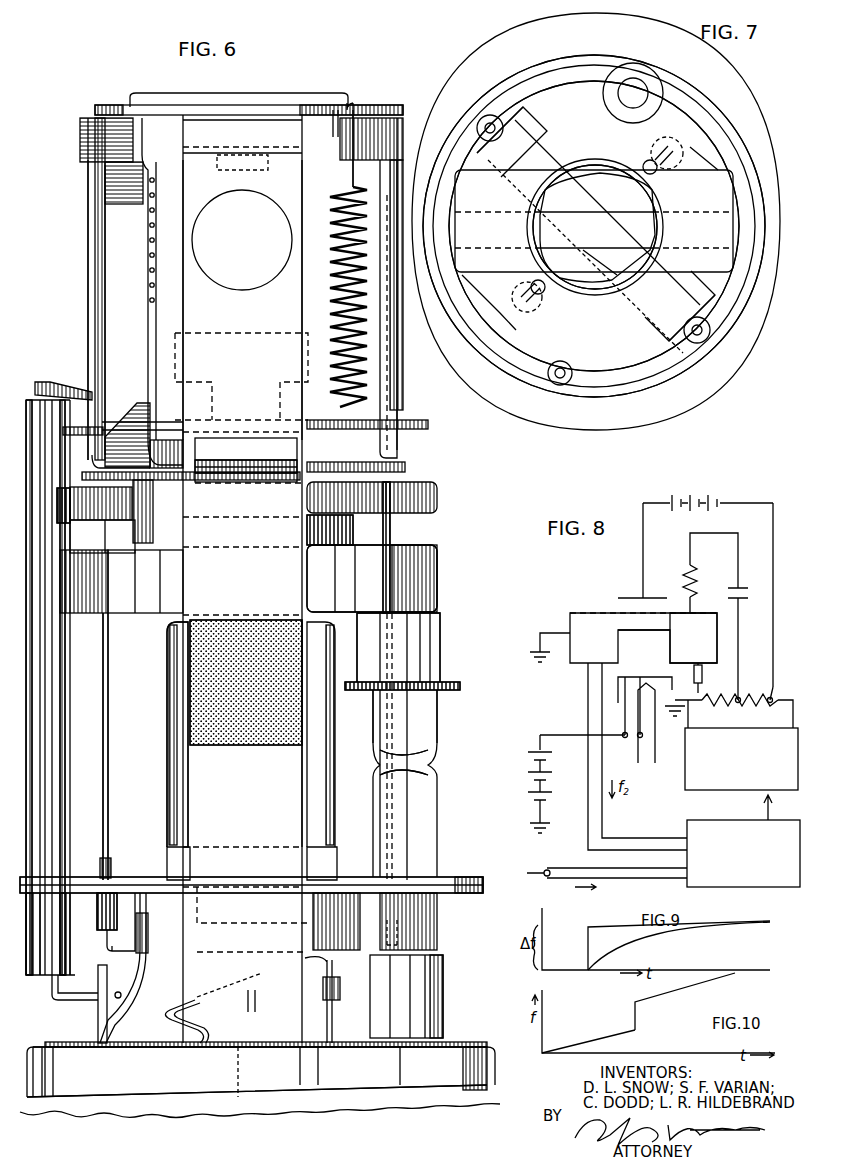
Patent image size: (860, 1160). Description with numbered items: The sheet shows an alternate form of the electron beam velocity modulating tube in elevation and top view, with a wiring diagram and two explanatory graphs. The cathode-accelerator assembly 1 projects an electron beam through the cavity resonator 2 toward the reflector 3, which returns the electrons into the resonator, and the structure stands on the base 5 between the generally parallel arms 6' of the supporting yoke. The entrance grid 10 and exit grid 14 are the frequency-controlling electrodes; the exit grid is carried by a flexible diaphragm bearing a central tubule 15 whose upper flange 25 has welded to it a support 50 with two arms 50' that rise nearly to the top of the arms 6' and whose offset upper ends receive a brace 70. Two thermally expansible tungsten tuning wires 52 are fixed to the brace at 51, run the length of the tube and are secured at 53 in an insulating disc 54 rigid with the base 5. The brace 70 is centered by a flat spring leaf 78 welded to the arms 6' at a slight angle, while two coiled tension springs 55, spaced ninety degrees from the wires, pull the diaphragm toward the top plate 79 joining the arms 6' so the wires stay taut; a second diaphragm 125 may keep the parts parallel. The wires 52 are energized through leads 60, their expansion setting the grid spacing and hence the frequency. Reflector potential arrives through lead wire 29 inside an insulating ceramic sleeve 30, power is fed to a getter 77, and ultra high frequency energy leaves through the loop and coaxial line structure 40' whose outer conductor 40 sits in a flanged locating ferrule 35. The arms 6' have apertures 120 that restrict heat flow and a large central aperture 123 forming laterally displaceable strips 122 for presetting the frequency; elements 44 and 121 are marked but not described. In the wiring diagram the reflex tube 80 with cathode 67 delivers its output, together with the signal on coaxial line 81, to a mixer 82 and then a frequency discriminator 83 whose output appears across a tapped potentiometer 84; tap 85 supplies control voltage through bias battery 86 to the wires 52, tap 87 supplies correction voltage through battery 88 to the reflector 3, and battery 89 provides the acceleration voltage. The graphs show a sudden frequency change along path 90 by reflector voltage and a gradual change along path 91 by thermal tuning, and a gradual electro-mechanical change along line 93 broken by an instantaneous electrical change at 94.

In FIG. 6, the cathode-accelerator assembly 1 is at (162, 741).
In FIG. 6, the cavity resonator 2 is at (344, 604).
In FIG. 8, the cavity resonator 2 is at (700, 644).
In FIG. 8, the reflector 3 is at (636, 597).
In FIG. 6, the base 5 is at (230, 1085).
In FIG. 6, the arms of the yoke 6' is at (257, 503).
In FIG. 7, the arms of the yoke 6' is at (606, 226).
In FIG. 8, the entrance grid 10 is at (655, 632).
In FIG. 8, the exit grid 14 is at (660, 613).
In FIG. 6, the tubule 15 is at (353, 528).
In FIG. 6, the flange of tubule 25 is at (405, 467).
In FIG. 6, the lead wire 29 is at (60, 392).
In FIG. 6, the insulating ceramic sleeve 30 is at (58, 655).
In FIG. 7, the insulating ceramic sleeve 30 is at (550, 375).
In FIG. 6, the flanged locating ferrule 35 is at (438, 646).
In FIG. 7, the flanged locating ferrule 35 is at (652, 82).
In FIG. 6, the outer conductor 40 is at (420, 716).
In FIG. 8, the outer conductor 40 is at (620, 756).
In FIG. 8, the loop and coaxial line structure 40' is at (714, 678).
In FIG. 6, the flexible neck 44 is at (432, 768).
In FIG. 6, the support 50 is at (166, 475).
In FIG. 6, the arms of support 50' is at (240, 310).
In FIG. 7, the arms of support 50' is at (623, 215).
In FIG. 6, the fixing point of tuning wires 51 is at (80, 142).
In FIG. 7, the fixing point of tuning wires 51 is at (487, 117).
In FIG. 6, the tuning wires 52 is at (100, 362).
In FIG. 8, the tuning wires 52 is at (710, 573).
In FIG. 6, the securing point of tuning wires 53 is at (103, 877).
In FIG. 6, the insulating disc 54 is at (150, 884).
In FIG. 6, the coiled tension springs 55 is at (158, 268).
In FIG. 7, the coiled tension springs 55 is at (662, 146).
In FIG. 6, the leads 60 is at (107, 938).
In FIG. 8, the cathode 67 is at (646, 668).
In FIG. 6, the brace 70 is at (328, 148).
In FIG. 7, the brace 70 is at (588, 205).
In FIG. 6, the getter 77 is at (340, 990).
In FIG. 6, the flat spring leaf 78 is at (268, 158).
In FIG. 7, the flat spring leaf 78 is at (563, 243).
In FIG. 6, the top plate 79 is at (268, 93).
In FIG. 7, the top plate 79 is at (604, 342).
In FIG. 8, the reflex velocity modulation tube 80 is at (596, 608).
In FIG. 8, the coaxial line 81 is at (582, 873).
In FIG. 8, the ultra high frequency mixer 82 is at (687, 860).
In FIG. 8, the frequency discriminator 83 is at (685, 786).
In FIG. 8, the tapped potentiometer 84 is at (742, 705).
In FIG. 8, the adjustable tap 85 is at (749, 683).
In FIG. 8, the bias battery 86 is at (742, 590).
In FIG. 8, the adjustable tap 87 is at (784, 683).
In FIG. 8, the battery 88 is at (708, 495).
In FIG. 8, the battery 89 is at (552, 780).
In FIG. 9, the path 90 is at (588, 938).
In FIG. 9, the path 91 is at (655, 930).
In FIG. 10, the line 93 is at (594, 1030).
In FIG. 10, the break point 94 is at (640, 1018).
In FIG. 6, the apertures 120 is at (265, 482).
In FIG. 6, the getter 121 is at (190, 640).
In FIG. 6, the strips 122 is at (300, 235).
In FIG. 6, the aperture 123 is at (258, 285).
In FIG. 6, the second diaphragm 125 is at (60, 520).